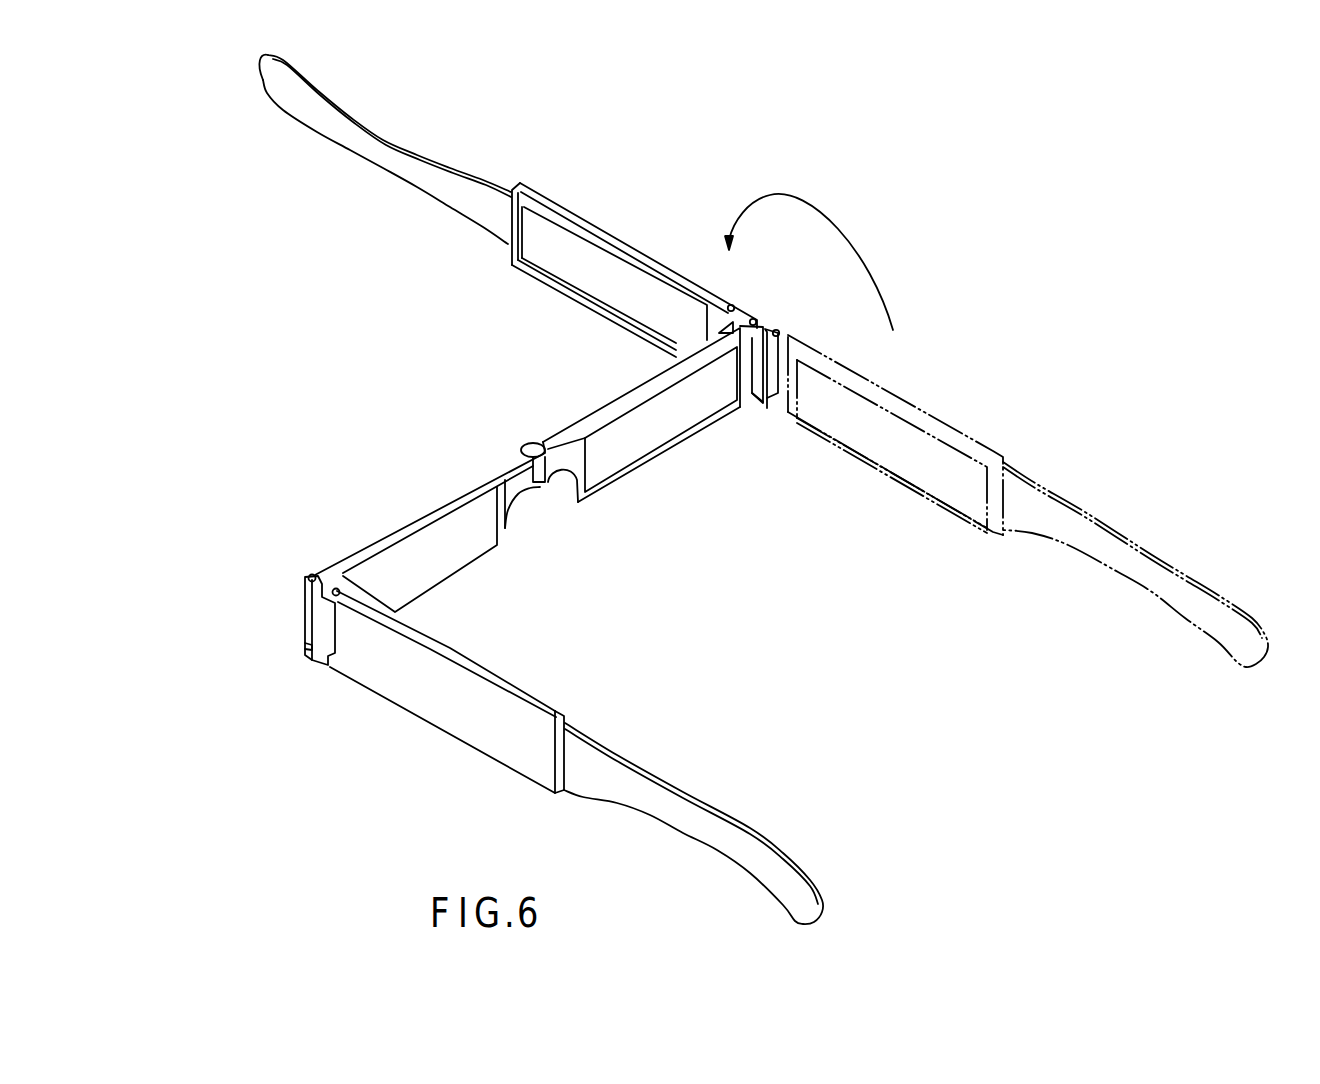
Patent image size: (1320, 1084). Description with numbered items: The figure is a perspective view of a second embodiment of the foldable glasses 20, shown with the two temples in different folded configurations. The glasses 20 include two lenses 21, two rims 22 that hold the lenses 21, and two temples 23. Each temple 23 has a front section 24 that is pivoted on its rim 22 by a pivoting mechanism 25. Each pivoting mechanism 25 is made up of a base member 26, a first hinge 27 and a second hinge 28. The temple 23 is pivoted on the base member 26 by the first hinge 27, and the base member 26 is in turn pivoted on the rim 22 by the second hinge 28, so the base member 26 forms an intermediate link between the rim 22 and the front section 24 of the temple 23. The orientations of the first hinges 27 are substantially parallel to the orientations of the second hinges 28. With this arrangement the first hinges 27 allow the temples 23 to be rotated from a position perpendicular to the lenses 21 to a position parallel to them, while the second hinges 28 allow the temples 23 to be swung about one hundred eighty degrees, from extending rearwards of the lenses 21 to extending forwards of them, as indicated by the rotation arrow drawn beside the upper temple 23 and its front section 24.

The foldable glasses 20 is at (418, 385).
The lens 21 is at (650, 440).
The rim 22 is at (487, 476).
The temple 23 is at (463, 717).
The front section 24 is at (598, 228).
The pivoting mechanism 25 is at (296, 634).
The base member 26 is at (311, 616).
The first hinge 27 is at (343, 572).
The second hinge 28 is at (312, 575).